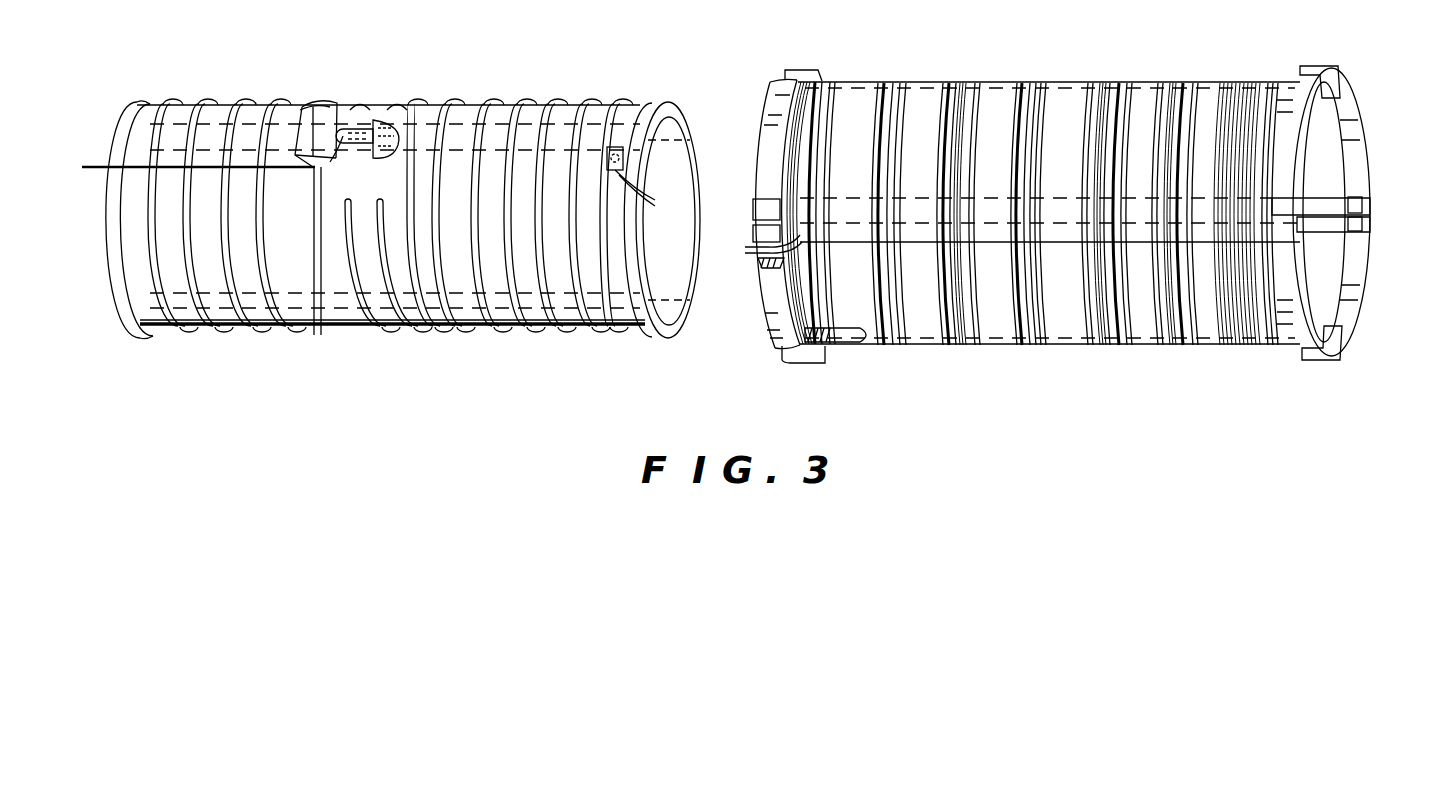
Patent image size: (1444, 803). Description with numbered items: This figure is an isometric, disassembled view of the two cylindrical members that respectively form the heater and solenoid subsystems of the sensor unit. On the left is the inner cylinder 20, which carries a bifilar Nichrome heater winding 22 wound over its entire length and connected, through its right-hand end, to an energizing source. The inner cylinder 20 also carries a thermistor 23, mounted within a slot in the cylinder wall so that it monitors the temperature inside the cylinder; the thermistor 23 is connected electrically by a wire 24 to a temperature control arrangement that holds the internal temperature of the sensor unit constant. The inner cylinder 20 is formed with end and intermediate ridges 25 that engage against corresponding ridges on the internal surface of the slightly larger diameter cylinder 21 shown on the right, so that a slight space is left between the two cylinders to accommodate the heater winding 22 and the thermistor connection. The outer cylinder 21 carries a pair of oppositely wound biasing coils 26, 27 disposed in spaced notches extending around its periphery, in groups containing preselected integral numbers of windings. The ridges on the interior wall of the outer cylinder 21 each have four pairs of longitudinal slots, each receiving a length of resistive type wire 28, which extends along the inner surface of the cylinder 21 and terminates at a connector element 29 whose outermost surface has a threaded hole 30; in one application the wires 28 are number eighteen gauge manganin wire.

The inner cylinder 20 is at (562, 330).
The cylinder 21 is at (1157, 345).
The bifilar Nichrome heater winding 22 is at (385, 108).
The thermistor 23 is at (369, 120).
The wire 24 is at (205, 168).
The end and intermediate ridges 25 is at (670, 103).
The biasing coil 26 is at (848, 92).
The biasing coil 27 is at (815, 85).
The resistive type wire 28 is at (830, 323).
The connector element 29 is at (785, 73).
The threaded hole 30 is at (1365, 198).